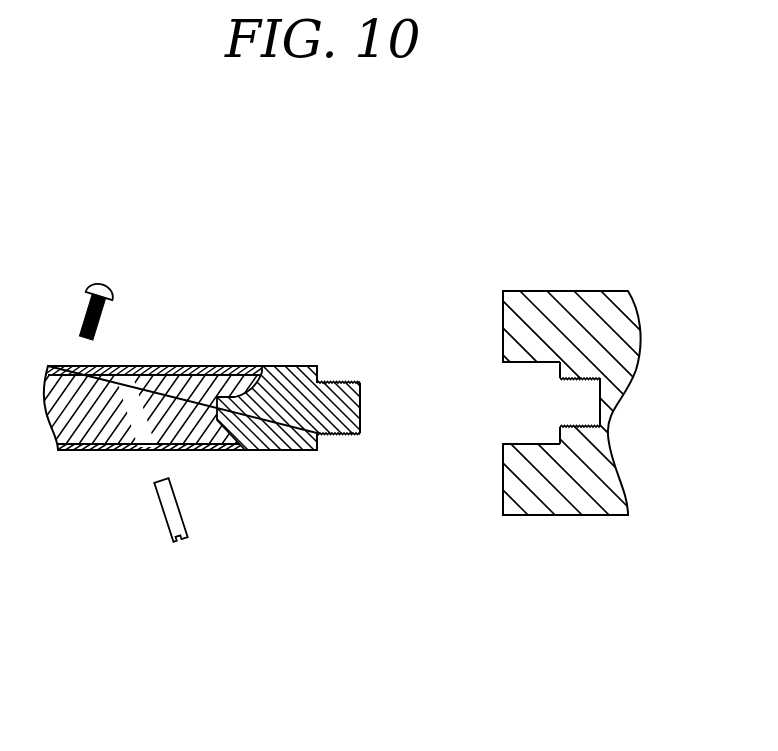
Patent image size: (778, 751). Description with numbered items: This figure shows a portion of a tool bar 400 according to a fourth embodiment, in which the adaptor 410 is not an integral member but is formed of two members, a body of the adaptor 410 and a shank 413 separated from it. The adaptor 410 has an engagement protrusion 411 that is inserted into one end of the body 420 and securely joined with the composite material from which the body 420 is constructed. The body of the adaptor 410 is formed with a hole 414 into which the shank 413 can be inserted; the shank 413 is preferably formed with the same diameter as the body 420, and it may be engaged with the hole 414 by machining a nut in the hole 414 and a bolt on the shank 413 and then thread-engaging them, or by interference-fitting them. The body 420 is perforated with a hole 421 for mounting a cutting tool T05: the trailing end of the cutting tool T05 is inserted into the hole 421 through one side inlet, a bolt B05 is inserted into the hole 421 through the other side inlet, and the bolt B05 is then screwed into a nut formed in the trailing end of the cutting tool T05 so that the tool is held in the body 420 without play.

The tool bar 400 is at (222, 139).
The adaptor 410 is at (573, 291).
The engagement protrusion 411 is at (242, 452).
The shank 413 is at (307, 437).
The hole 414 is at (510, 415).
The body 420 is at (209, 366).
The hole 421 is at (140, 418).
The bolt B05 is at (97, 293).
The cutting tool T05 is at (183, 538).